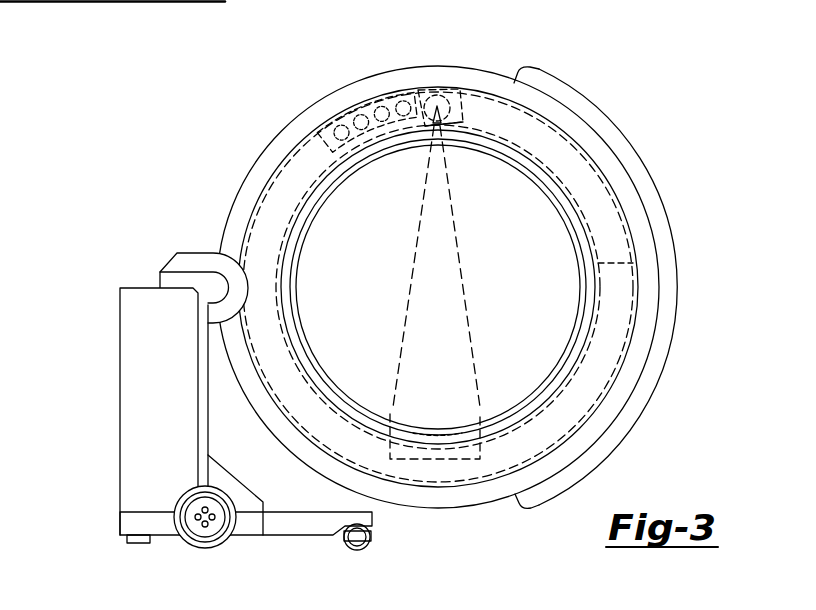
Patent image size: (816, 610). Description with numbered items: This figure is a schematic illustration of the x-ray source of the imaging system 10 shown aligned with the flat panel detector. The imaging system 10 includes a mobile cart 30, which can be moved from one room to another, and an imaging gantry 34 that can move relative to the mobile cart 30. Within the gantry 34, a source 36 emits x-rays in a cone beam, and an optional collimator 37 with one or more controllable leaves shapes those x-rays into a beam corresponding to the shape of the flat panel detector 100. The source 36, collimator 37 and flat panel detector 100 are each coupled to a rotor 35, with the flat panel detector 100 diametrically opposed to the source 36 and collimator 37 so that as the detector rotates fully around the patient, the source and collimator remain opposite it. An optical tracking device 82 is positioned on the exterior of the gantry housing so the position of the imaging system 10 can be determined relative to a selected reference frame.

The imaging system 10 is at (613, 104).
The mobile cart 30 is at (120, 527).
The imaging gantry 34 is at (413, 508).
The rotor 35 is at (462, 121).
The source 36 is at (453, 88).
The collimator 37 is at (427, 97).
The optical tracking device 82 is at (325, 143).
The flat panel detector 100 is at (465, 460).